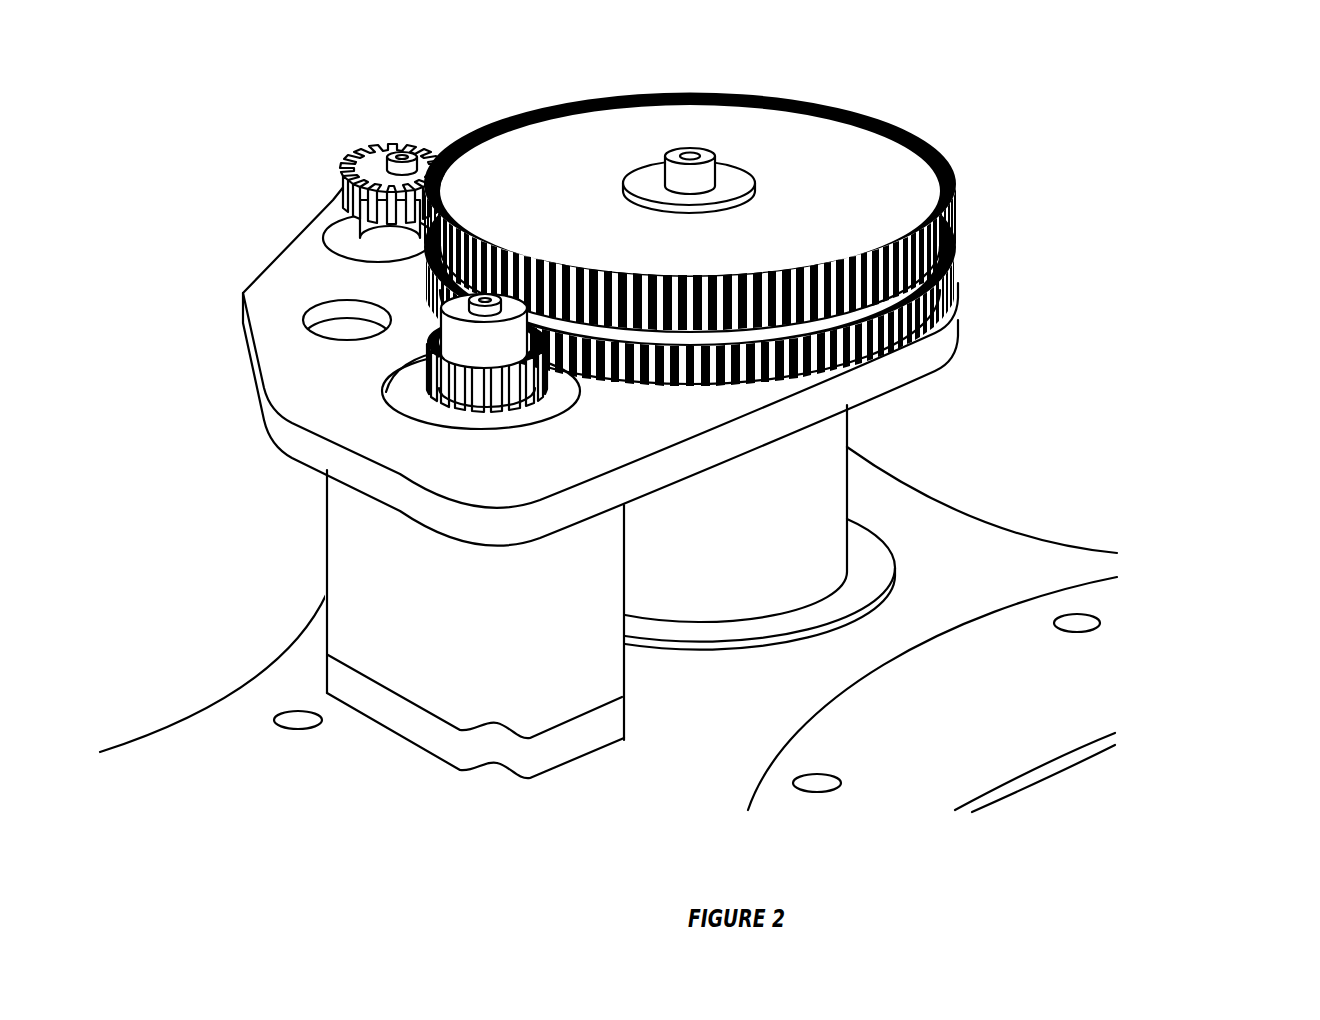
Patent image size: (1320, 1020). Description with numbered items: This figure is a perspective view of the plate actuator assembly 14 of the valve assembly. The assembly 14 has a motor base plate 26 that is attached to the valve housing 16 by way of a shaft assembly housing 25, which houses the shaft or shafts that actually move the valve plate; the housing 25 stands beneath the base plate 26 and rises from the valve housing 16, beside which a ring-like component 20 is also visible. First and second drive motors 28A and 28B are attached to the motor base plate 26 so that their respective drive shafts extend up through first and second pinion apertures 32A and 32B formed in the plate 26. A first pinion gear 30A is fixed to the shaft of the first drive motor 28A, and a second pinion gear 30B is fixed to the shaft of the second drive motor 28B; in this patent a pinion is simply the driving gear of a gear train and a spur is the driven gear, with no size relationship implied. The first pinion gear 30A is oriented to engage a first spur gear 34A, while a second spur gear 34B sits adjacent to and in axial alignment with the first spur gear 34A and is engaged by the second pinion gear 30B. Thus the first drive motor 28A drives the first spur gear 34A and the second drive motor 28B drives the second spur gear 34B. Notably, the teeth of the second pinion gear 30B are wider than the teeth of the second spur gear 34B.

The plate actuator assembly 14 is at (1240, 177).
The valve housing 16 is at (1017, 563).
The bearing ring 20 is at (1067, 697).
The shaft assembly housing 25 is at (823, 490).
The motor base plate 26 is at (303, 440).
The first drive motor 28A is at (585, 692).
The second drive motor 28B is at (308, 548).
The first pinion gear 30A is at (440, 423).
The second pinion gear 30B is at (342, 185).
The first pinion aperture 32A is at (553, 408).
The second pinion aperture 32B is at (342, 213).
The first spur gear 34A is at (957, 305).
The second spur gear 34B is at (853, 147).